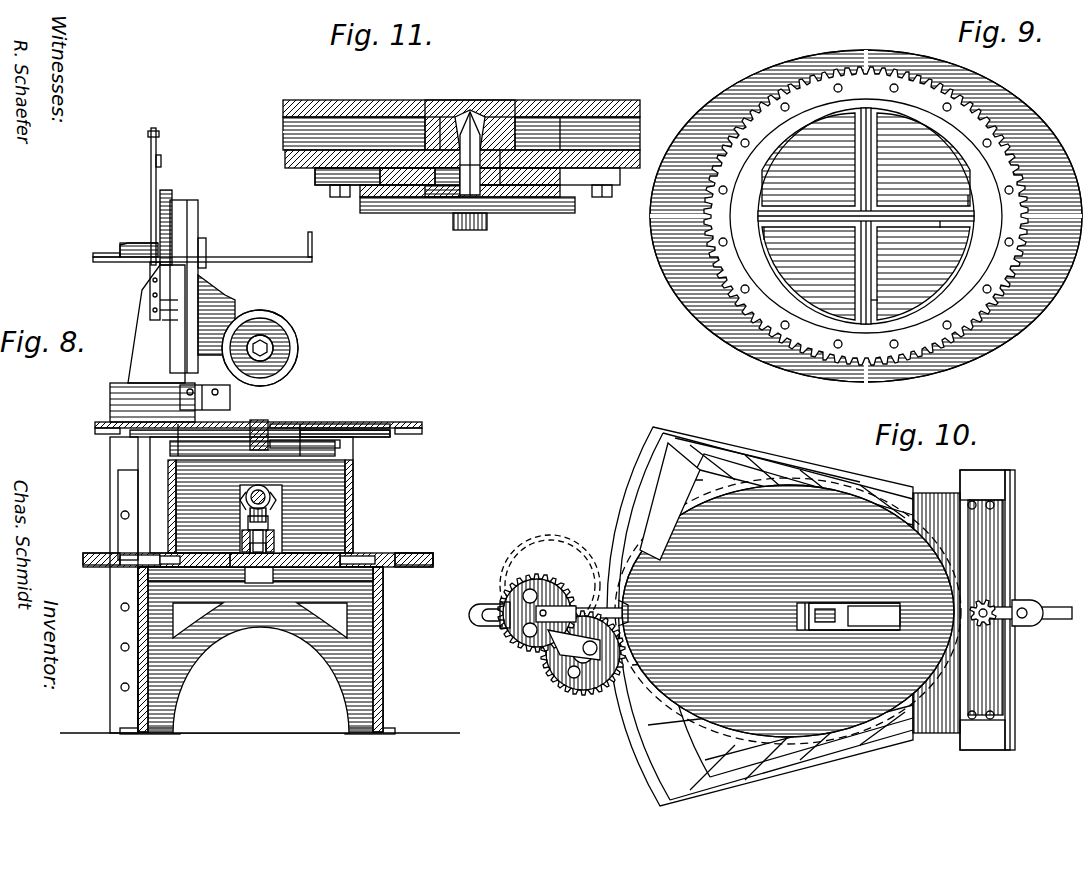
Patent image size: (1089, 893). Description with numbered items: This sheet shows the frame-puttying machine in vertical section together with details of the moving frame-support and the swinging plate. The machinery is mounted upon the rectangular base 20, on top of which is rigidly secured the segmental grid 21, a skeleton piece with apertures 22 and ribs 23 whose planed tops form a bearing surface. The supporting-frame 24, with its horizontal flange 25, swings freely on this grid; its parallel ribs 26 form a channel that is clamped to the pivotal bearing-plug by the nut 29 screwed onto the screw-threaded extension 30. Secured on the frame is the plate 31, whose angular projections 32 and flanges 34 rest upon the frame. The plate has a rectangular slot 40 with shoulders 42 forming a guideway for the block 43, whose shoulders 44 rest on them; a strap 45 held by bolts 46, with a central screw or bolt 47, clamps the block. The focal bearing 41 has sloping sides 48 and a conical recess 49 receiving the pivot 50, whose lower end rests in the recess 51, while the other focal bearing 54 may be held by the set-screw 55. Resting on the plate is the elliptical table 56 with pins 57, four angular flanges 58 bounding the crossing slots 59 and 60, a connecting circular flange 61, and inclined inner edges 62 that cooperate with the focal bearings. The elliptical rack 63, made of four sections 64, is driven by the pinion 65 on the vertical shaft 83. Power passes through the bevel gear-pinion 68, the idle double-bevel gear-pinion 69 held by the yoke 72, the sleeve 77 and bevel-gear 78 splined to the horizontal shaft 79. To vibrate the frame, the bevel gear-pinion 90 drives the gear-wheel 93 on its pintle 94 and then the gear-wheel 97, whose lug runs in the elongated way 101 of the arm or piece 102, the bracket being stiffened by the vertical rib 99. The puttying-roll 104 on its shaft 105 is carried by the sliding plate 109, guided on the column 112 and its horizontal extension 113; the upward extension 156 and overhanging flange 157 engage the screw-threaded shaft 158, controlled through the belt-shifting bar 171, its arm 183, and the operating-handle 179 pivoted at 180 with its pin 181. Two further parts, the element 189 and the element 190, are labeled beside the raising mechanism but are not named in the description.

In FIG. 8, the rectangular base 20 is at (318, 632).
In FIG. 10, the rectangular base 20 is at (940, 495).
In FIG. 8, the segmental grid 21 is at (425, 560).
In FIG. 10, the segmental grid 21 is at (705, 440).
In FIG. 8, the apertures 22 is at (385, 562).
In FIG. 10, the apertures 22 is at (672, 462).
In FIG. 8, the ribs 23 is at (350, 556).
In FIG. 10, the ribs 23 is at (780, 478).
In FIG. 8, the supporting-frame 24 is at (347, 476).
In FIG. 8, the horizontal flange 25 is at (118, 545).
In FIG. 8, the parallel ribs 26 is at (244, 535).
In FIG. 8, the nut 29 is at (270, 546).
In FIG. 8, the screw-threaded extension 30 is at (262, 568).
In FIG. 8, the plate 31 is at (160, 444).
In FIG. 11, the plate 31 is at (288, 158).
In FIG. 10, the plate 31 is at (822, 508).
In FIG. 8, the angular projections 32 is at (178, 430).
In FIG. 8, the flanges 34 is at (172, 480).
In FIG. 11, the rectangular slot 40 is at (535, 170).
In FIG. 10, the rectangular slot 40 is at (792, 604).
In FIG. 11, the focal bearing 41 is at (471, 118).
In FIG. 10, the focal bearing 41 is at (828, 607).
In FIG. 11, the shoulders 42 is at (428, 196).
In FIG. 8, the block 43 is at (266, 435).
In FIG. 11, the block 43 is at (447, 200).
In FIG. 10, the block 43 is at (842, 612).
In FIG. 11, the shoulders 44 is at (505, 190).
In FIG. 11, the strap 45 is at (385, 205).
In FIG. 11, the bolts 46 is at (340, 199).
In FIG. 11, the screw or bolt 47 is at (478, 200).
In FIG. 11, the sides 48 is at (452, 112).
In FIG. 11, the conical recess 49 is at (448, 118).
In FIG. 11, the pivot 50 is at (505, 140).
In FIG. 11, the recess 51 is at (465, 200).
In FIG. 8, the focal bearing 54 is at (260, 425).
In FIG. 10, the focal bearing 54 is at (805, 632).
In FIG. 10, the set-screw 55 is at (797, 613).
In FIG. 8, the frame support or table 56 is at (402, 424).
In FIG. 9, the frame support or table 56 is at (1023, 110).
In FIG. 9, the pins 57 is at (792, 147).
In FIG. 8, the angular flanges 58 is at (357, 432).
In FIG. 11, the angular flanges 58 is at (442, 132).
In FIG. 9, the angular flanges 58 is at (880, 165).
In FIG. 9, the slot 59 is at (897, 220).
In FIG. 8, the slot 60 is at (305, 430).
In FIG. 9, the slot 60 is at (866, 278).
In FIG. 11, the circular flange 61 is at (350, 130).
In FIG. 9, the circular flange 61 is at (975, 187).
In FIG. 8, the inner edges 62 is at (345, 432).
In FIG. 9, the inner edges 62 is at (950, 225).
In FIG. 8, the elliptical rack 63 is at (118, 432).
In FIG. 9, the elliptical rack 63 is at (965, 312).
In FIG. 9, the sections 64 is at (808, 93).
In FIG. 11, the pinion 65 is at (290, 104).
In FIG. 10, the pinion 65 is at (992, 605).
In FIG. 8, the bevel gear-pinion 68 is at (272, 522).
In FIG. 8, the idle double-bevel gear-pinion 69 is at (268, 514).
In FIG. 8, the yoke 72 is at (249, 512).
In FIG. 8, the sleeve 77 is at (252, 490).
In FIG. 8, the bevel-gear 78 is at (262, 490).
In FIG. 8, the horizontal shaft 79 is at (272, 500).
In FIG. 10, the vertical shaft 83 is at (1000, 625).
In FIG. 10, the bevel gear-pinion 90 is at (622, 624).
In FIG. 10, the gear-wheel 93 is at (578, 690).
In FIG. 10, the bearing or pintle 94 is at (560, 662).
In FIG. 10, the gear-wheel 97 is at (526, 648).
In FIG. 10, the vertical rib 99 is at (586, 600).
In FIG. 10, the elongated way 101 is at (492, 605).
In FIG. 10, the arm or piece 102 is at (490, 624).
In FIG. 8, the puttying-roll 104 is at (272, 330).
In FIG. 8, the shaft 105 is at (270, 348).
In FIG. 8, the sliding plate 109 is at (200, 252).
In FIG. 8, the column 112 is at (125, 398).
In FIG. 8, the horizontal extension 113 is at (145, 330).
In FIG. 8, the upward extension 156 is at (195, 225).
In FIG. 8, the overhanging flange 157 is at (184, 206).
In FIG. 8, the screw-threaded shaft 158 is at (168, 198).
In FIG. 8, the belt-shifting bar 171 is at (148, 247).
In FIG. 8, the operating-handle 179 is at (202, 258).
In FIG. 8, the pivot 180 is at (150, 265).
In FIG. 8, the pin 181 is at (100, 255).
In FIG. 8, the arm 183 is at (122, 247).
In FIG. 8, the vertical rod 189 is at (156, 133).
In FIG. 8, the rod stop 190 is at (155, 161).